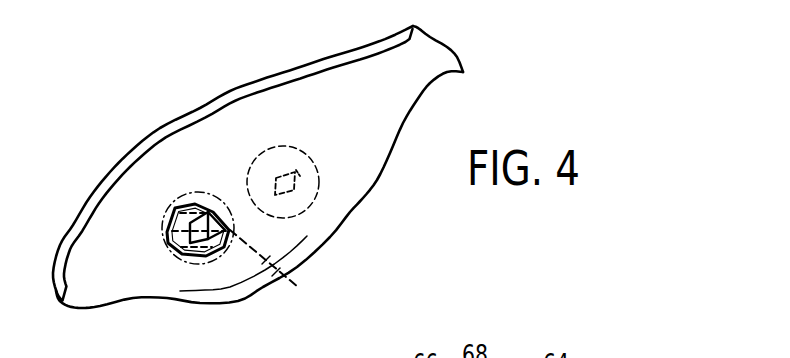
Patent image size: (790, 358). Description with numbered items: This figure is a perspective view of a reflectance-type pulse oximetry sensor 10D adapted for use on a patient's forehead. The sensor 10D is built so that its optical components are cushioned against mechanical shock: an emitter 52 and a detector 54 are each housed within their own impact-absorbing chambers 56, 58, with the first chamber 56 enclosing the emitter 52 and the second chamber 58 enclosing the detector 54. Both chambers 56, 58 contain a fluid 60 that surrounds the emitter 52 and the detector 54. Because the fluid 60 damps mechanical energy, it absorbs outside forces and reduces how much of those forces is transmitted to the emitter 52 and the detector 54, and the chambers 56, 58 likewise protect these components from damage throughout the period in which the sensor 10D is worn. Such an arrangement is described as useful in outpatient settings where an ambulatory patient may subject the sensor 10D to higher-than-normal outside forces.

The reflectance-type sensor 10D is at (518, 73).
The emitter 52 is at (218, 249).
The detector 54 is at (295, 184).
The impact-absorbing chamber 56 is at (281, 271).
The impact-absorbing chamber 58 is at (308, 207).
The fluid 60 is at (168, 275).